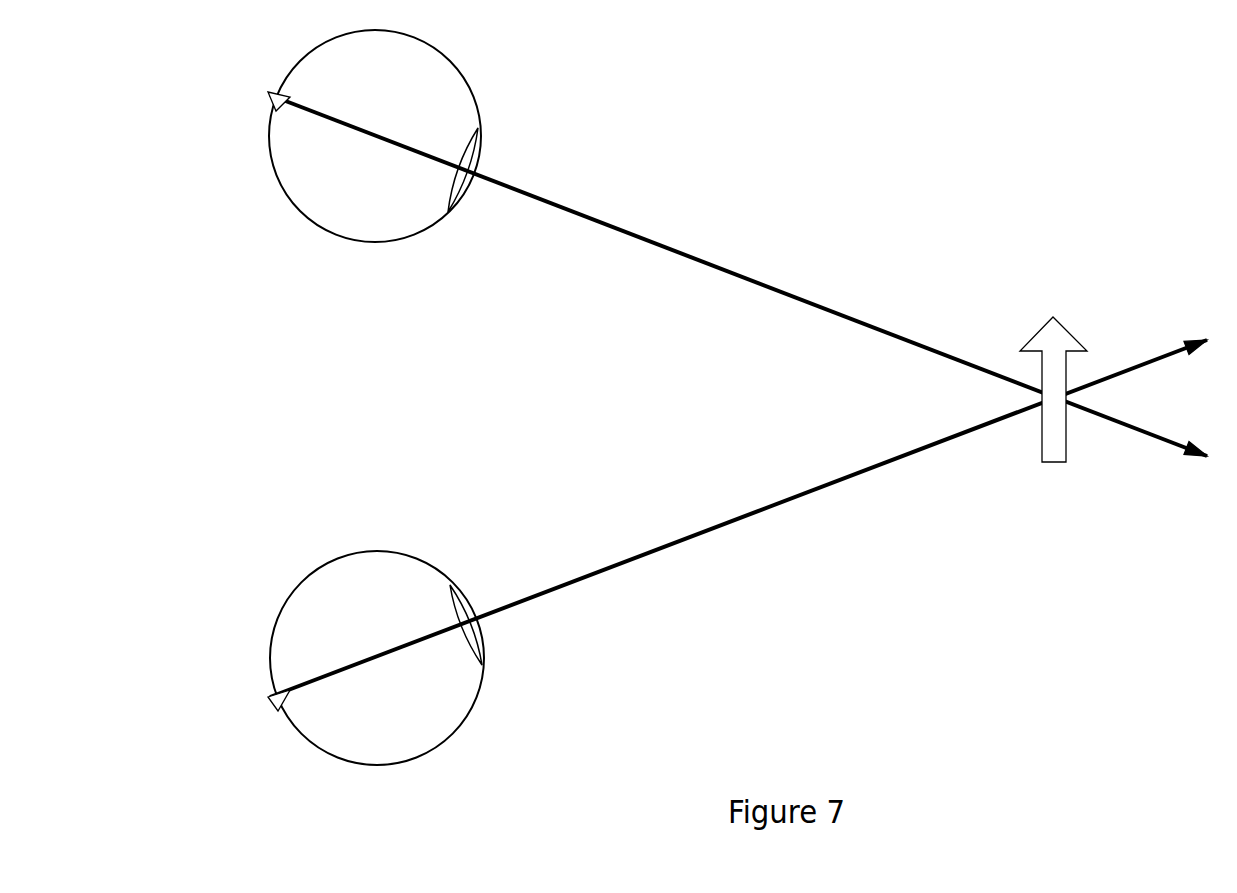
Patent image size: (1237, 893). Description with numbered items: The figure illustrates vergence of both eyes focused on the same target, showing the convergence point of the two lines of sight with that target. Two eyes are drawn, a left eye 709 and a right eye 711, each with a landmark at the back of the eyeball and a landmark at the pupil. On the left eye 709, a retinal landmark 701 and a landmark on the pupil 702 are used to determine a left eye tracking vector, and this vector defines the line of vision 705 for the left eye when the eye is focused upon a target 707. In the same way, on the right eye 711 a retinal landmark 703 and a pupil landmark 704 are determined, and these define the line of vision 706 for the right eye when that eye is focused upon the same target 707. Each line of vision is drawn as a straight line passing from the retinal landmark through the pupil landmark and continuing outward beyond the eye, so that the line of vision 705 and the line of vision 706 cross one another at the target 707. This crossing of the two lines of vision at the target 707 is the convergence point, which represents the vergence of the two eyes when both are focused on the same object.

The retinal landmark 701 is at (267, 93).
The landmark on the pupil 702 is at (468, 195).
The retinal landmark 703 is at (268, 692).
The pupil landmark 704 is at (470, 605).
The line of vision 705 is at (677, 247).
The line of vision 706 is at (712, 523).
The target 707 is at (1038, 448).
The left eye 709 is at (467, 77).
The right eye 711 is at (390, 548).